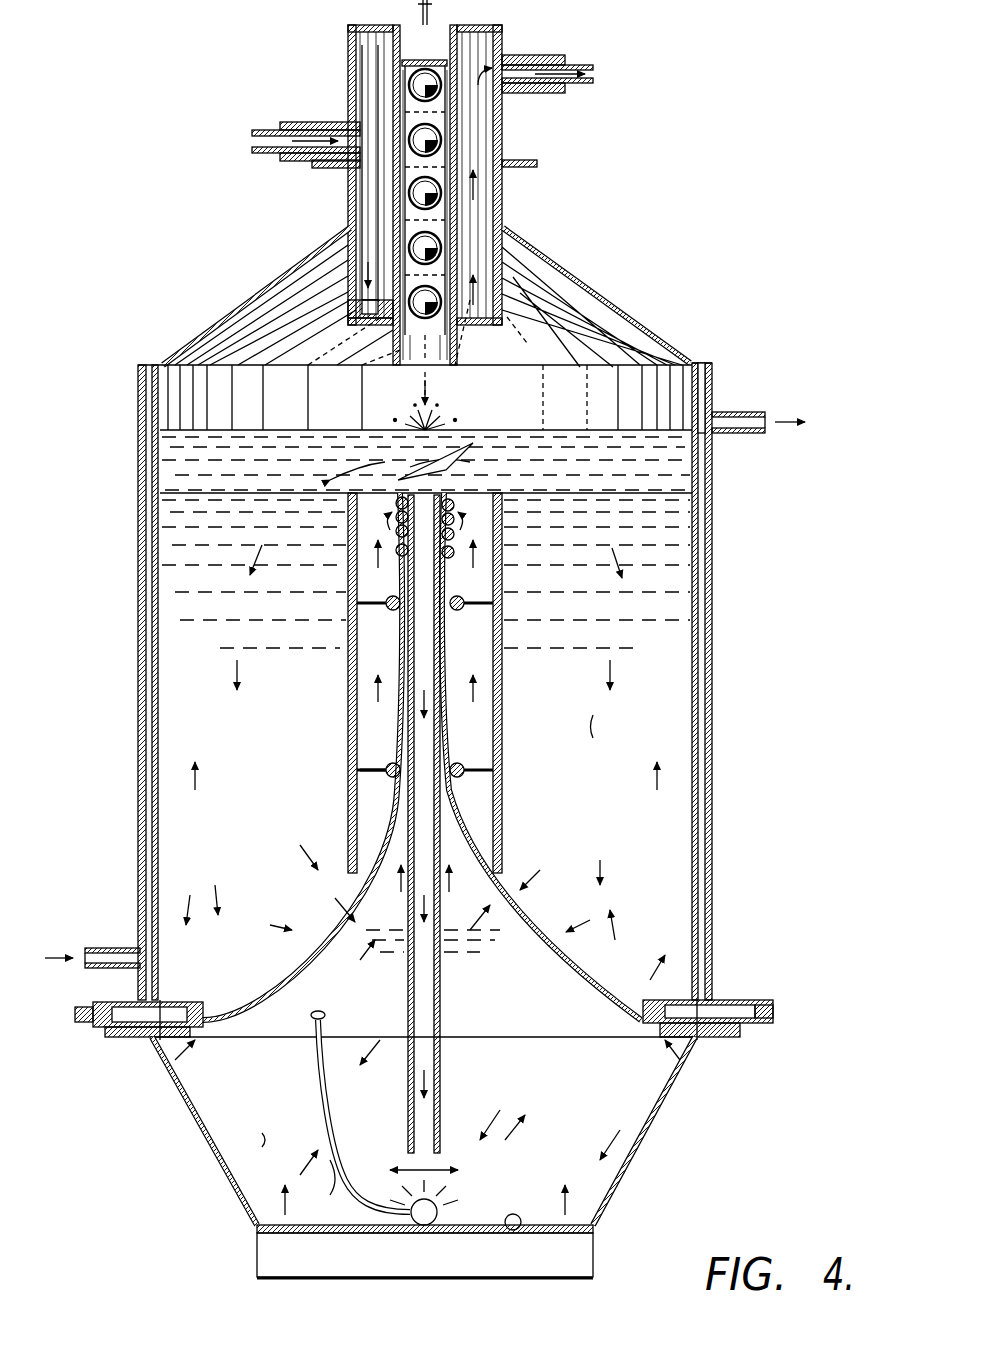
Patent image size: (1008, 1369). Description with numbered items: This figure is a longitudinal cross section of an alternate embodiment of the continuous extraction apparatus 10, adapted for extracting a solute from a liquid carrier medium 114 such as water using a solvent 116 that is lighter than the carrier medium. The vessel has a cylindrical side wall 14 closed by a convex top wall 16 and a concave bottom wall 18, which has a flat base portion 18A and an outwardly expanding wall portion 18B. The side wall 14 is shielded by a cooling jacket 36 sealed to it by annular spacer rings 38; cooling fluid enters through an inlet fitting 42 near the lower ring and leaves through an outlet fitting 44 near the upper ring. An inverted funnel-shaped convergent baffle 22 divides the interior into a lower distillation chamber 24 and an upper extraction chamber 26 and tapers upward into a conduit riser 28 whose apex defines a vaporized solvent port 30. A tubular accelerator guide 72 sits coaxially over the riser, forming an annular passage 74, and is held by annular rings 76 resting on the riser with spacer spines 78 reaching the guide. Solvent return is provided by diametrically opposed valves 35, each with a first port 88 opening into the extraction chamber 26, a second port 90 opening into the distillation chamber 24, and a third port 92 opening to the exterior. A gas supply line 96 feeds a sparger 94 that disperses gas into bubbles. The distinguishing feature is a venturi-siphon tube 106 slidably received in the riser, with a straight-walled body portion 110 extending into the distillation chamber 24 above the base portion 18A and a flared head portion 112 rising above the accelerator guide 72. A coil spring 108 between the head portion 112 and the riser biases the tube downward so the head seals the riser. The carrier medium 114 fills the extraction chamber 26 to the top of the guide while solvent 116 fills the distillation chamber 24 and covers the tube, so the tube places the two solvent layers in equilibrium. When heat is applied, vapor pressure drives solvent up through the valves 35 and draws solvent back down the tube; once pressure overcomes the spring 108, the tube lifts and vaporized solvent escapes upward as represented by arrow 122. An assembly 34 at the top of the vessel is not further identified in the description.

The continuous extraction apparatus 10 is at (118, 145).
The valve assembly 34 is at (600, 125).
The top wall 16 is at (622, 318).
The annular spacer rings 38 is at (712, 375).
The outlet fitting 44 is at (735, 412).
The solvent 116 is at (185, 456).
The flared head portion 112 is at (500, 456).
The vaporized solvent port 30 is at (398, 530).
The coil spring 108 is at (505, 492).
The liquid carrier medium 114 is at (680, 531).
The spacer spines 78 is at (386, 604).
The annular passage 74 is at (500, 628).
The accelerator guide 72 is at (500, 655).
The conduit riser 28 is at (607, 705).
The extraction chamber 26 is at (596, 727).
The annular rings 76 is at (386, 608).
The venturi-siphon tube 106 is at (446, 840).
The cylindrical side wall 14 is at (698, 750).
The cooling jacket 36 is at (712, 785).
The body portion 110 is at (388, 812).
The convergent baffle 22 is at (555, 975).
The arrow 122 is at (575, 985).
The first port 88 is at (152, 1000).
The inlet fitting 42 is at (93, 948).
The valves 35 is at (108, 1038).
The third port 92 is at (120, 1037).
The second port 90 is at (172, 1040).
The distillation chamber 24 is at (262, 1140).
The gas supply line 96 is at (335, 1145).
The bottom wall 18 is at (426, 1175).
The outwardly expanding wall portion 18B is at (640, 1135).
The flat base portion 18A is at (515, 1230).
The sparger 94 is at (412, 1222).